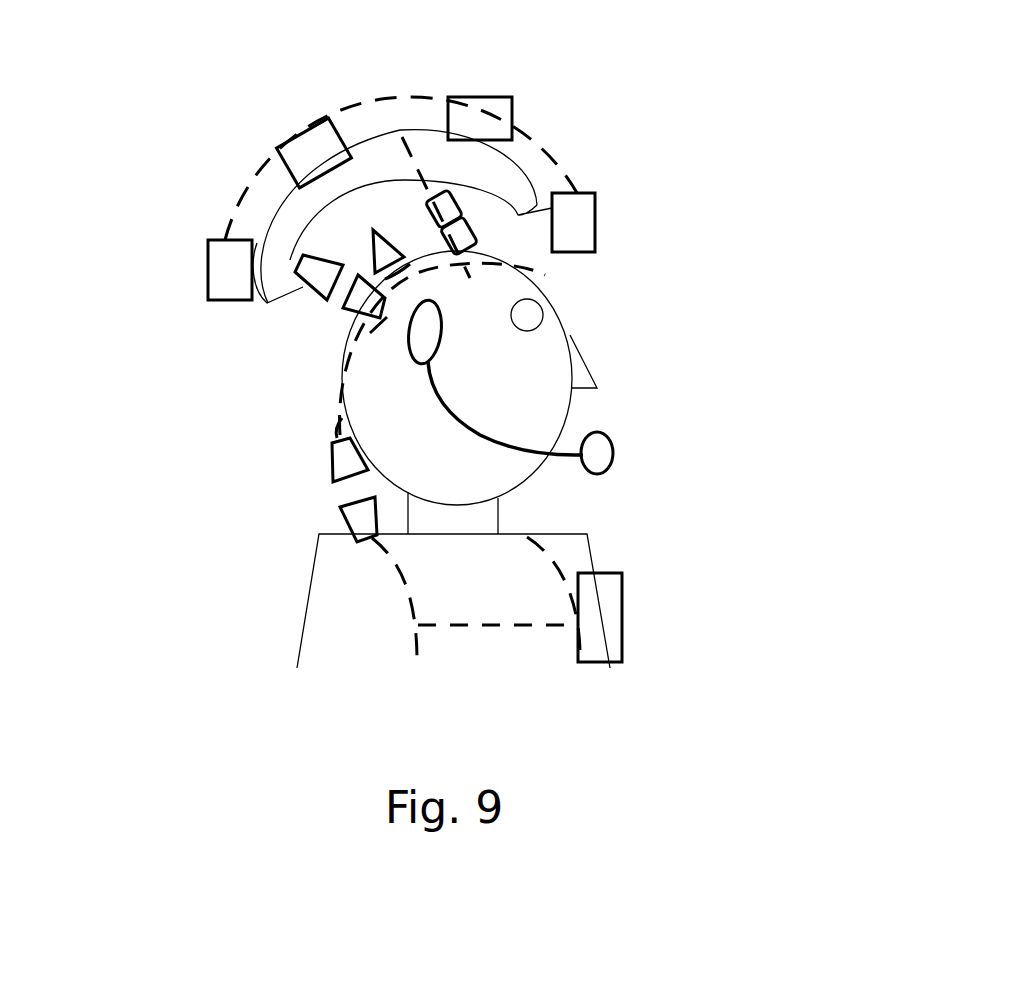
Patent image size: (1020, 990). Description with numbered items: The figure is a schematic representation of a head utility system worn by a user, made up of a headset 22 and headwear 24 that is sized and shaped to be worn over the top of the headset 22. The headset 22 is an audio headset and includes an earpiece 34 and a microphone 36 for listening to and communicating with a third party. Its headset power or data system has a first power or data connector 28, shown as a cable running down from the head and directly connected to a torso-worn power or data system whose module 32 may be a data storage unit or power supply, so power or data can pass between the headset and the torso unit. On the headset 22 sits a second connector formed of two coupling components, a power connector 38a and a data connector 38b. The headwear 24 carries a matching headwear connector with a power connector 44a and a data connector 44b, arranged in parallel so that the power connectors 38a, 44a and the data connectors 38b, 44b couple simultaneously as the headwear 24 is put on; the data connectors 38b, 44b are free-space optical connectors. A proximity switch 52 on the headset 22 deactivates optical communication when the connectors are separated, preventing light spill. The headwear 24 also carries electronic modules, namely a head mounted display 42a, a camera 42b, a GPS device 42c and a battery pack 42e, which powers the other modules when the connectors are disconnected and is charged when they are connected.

The headset 22 is at (140, 459).
The headwear 24 is at (628, 90).
The first power or data connector 28 is at (332, 463).
The module 32 is at (623, 607).
The earpiece 34 is at (413, 358).
The microphone 36 is at (610, 462).
The power connector 38a is at (467, 244).
The data connector 38b is at (343, 307).
The head mounted display 42a is at (580, 219).
The camera 42b is at (480, 118).
The GPS device 42c is at (314, 153).
The battery pack 42e is at (222, 270).
The power connector 44a is at (440, 205).
The data connector 44b is at (315, 290).
The proximity switch 52 is at (376, 262).